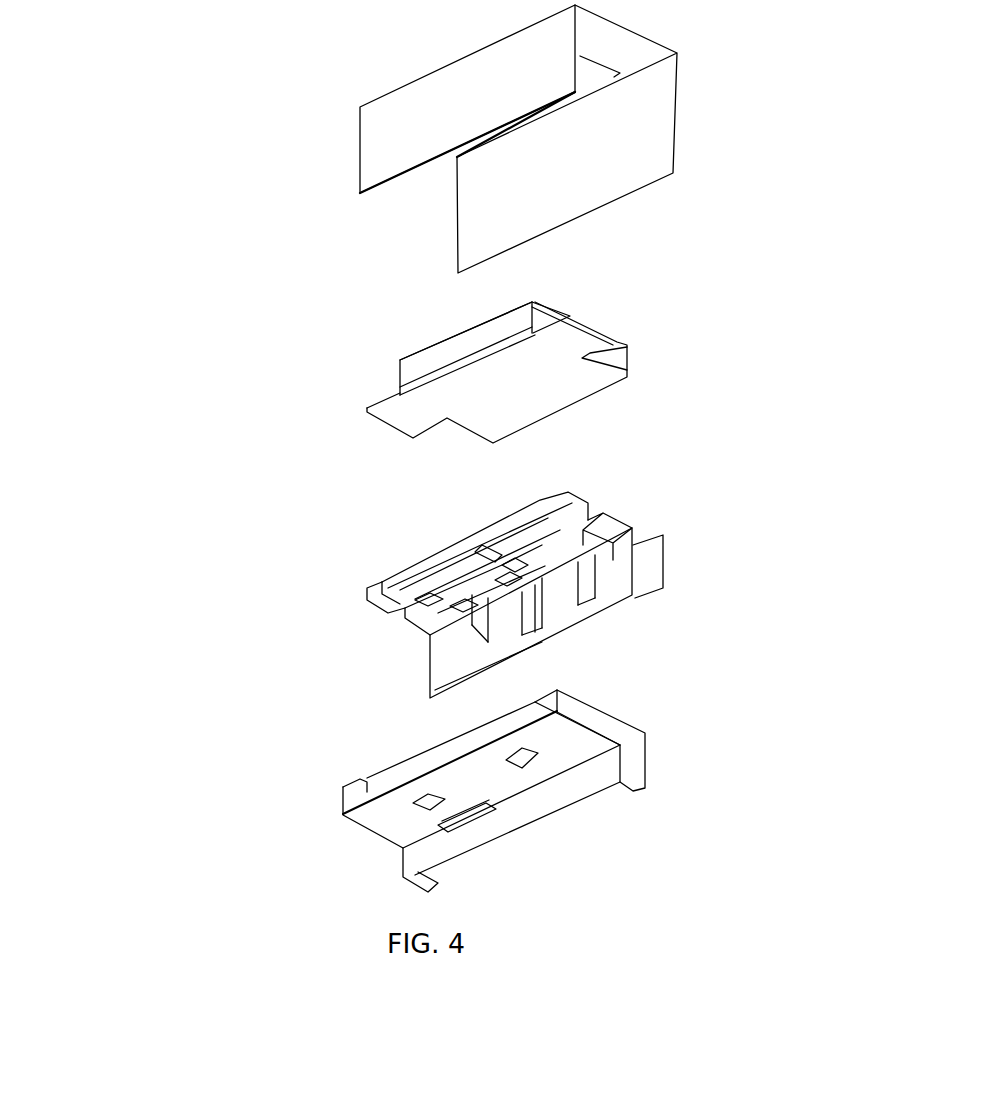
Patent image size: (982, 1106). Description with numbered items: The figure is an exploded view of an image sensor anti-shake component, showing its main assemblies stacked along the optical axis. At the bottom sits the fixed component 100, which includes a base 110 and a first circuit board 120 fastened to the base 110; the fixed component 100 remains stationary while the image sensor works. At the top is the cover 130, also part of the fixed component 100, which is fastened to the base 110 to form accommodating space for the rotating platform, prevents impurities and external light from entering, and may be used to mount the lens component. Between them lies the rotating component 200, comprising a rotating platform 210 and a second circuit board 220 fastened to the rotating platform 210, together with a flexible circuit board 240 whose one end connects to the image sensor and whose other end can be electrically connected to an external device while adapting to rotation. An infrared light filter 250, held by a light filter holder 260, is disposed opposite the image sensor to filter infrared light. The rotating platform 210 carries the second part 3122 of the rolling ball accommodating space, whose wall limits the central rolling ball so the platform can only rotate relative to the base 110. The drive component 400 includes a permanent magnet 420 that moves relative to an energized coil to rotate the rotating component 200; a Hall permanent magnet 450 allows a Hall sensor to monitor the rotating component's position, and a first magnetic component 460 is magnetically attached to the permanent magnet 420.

The fixed component 100 is at (231, 861).
The base 110 is at (350, 798).
The first circuit board 120 is at (380, 829).
The cover 130 is at (373, 137).
The rotating component 200 is at (742, 253).
The rotating platform 210 is at (613, 533).
The second circuit board 220 is at (583, 380).
The flexible circuit board 240 is at (645, 575).
The infrared light filter 250 is at (517, 303).
The light filter holder 260 is at (610, 355).
The drive component 400 is at (302, 643).
The permanent magnet 420 is at (428, 602).
The Hall permanent magnet 450 is at (462, 607).
The first magnetic component 460 is at (422, 803).
The second part 3122 is at (502, 577).